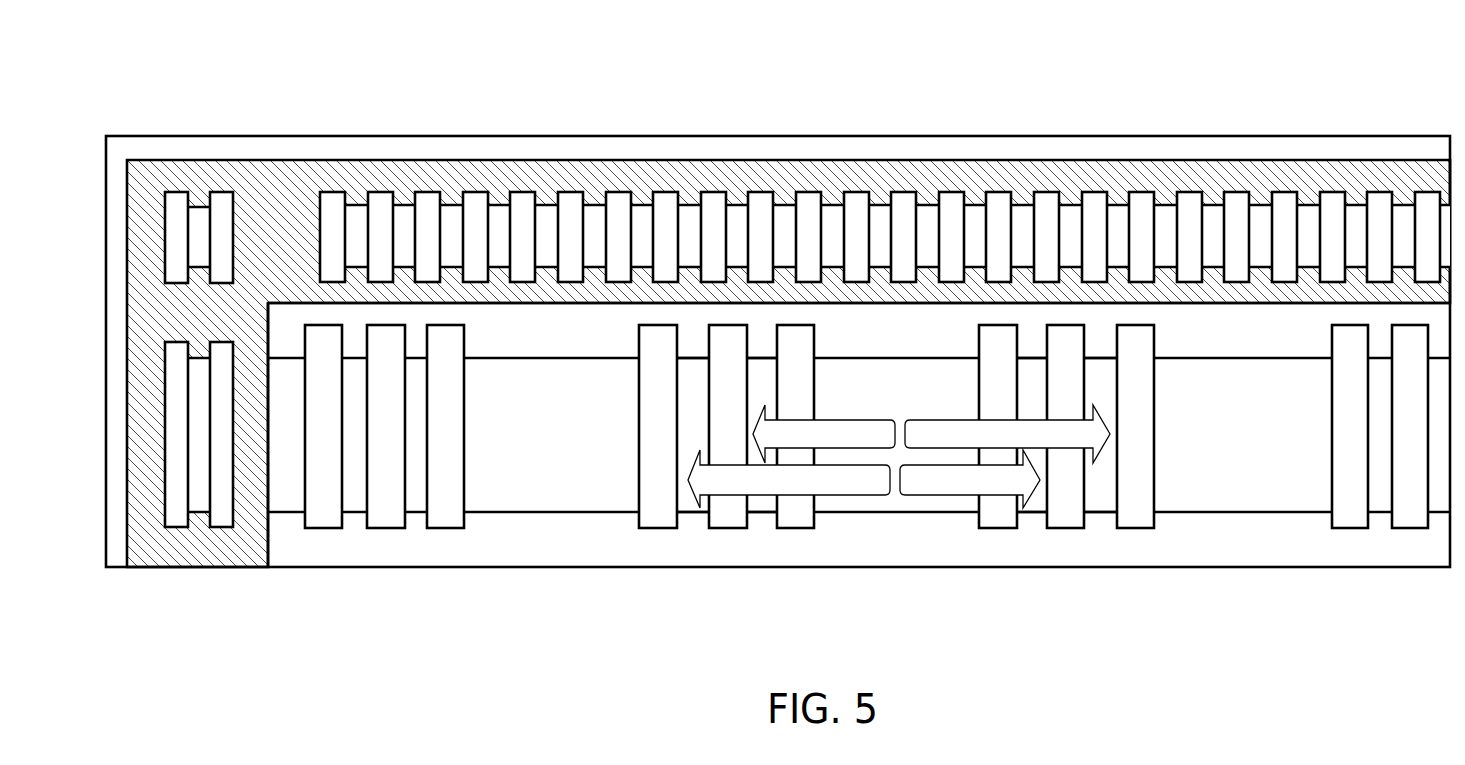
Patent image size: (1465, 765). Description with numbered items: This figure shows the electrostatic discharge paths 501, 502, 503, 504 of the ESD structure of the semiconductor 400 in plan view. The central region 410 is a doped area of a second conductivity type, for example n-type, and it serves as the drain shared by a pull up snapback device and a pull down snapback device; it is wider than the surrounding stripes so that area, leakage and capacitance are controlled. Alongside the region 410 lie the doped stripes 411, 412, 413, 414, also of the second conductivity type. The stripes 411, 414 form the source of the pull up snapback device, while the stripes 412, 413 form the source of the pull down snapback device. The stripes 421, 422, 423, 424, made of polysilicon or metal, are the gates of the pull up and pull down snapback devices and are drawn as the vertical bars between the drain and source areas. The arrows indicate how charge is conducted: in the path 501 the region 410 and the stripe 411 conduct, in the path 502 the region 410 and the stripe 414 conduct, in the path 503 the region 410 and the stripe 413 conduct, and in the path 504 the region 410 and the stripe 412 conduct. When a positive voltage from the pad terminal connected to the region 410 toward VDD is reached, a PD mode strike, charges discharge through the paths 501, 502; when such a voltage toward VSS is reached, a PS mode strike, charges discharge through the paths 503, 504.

The semiconductor 400 is at (132, 49).
The region 410 is at (859, 435).
The stripe 411 is at (762, 505).
The stripe 412 is at (1033, 508).
The stripe 413 is at (688, 505).
The stripe 414 is at (1103, 508).
The stripe 421 is at (797, 513).
The stripe 422 is at (992, 518).
The stripe 423 is at (725, 513).
The stripe 424 is at (1065, 513).
The electrostatic discharge path 501 is at (824, 434).
The electrostatic discharge path 502 is at (1007, 434).
The electrostatic discharge path 503 is at (789, 479).
The electrostatic discharge path 504 is at (970, 479).